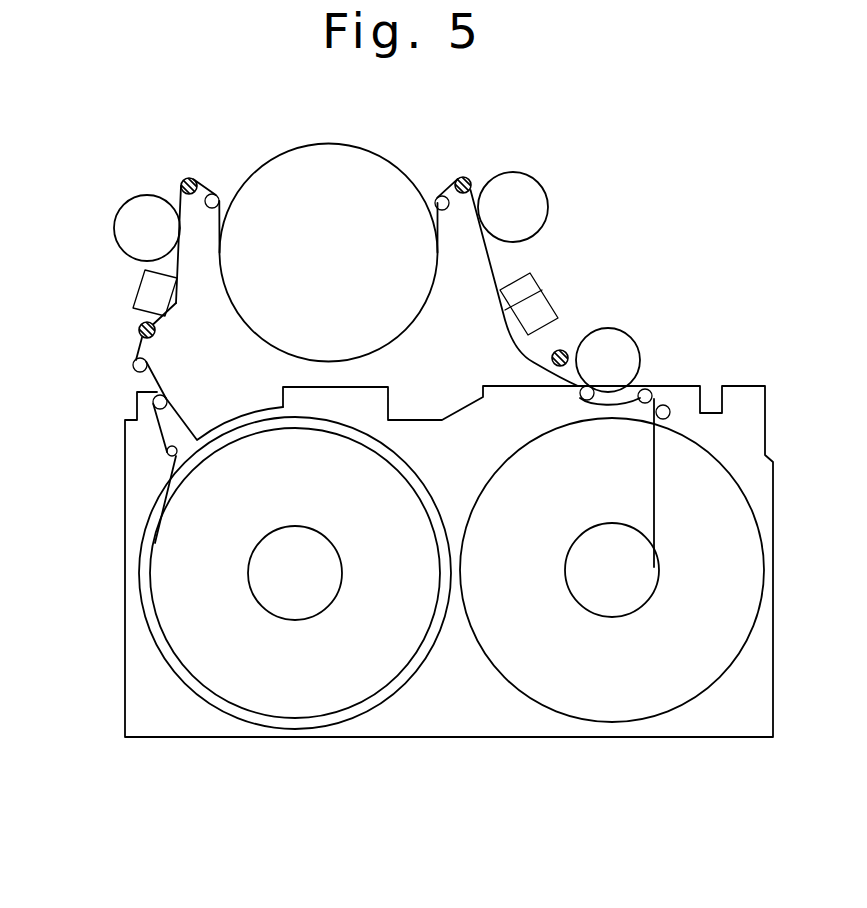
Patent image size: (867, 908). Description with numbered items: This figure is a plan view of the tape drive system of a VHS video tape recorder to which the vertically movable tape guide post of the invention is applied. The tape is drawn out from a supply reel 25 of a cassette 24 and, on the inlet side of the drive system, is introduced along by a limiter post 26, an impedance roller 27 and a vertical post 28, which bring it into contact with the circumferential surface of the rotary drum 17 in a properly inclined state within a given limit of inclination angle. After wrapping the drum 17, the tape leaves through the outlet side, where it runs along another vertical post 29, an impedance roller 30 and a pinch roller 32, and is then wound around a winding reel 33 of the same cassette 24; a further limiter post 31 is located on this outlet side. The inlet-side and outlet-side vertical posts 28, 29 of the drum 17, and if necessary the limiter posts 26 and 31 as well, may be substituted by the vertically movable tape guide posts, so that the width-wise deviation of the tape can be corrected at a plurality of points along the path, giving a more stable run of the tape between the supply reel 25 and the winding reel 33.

The rotary drum 17 is at (312, 160).
The cassette 24 is at (458, 723).
The supply reel 25 is at (262, 702).
The limiter post 26 is at (138, 332).
The impedance roller 27 is at (132, 222).
The vertical post 28 is at (188, 178).
The vertical post 29 is at (470, 178).
The impedance roller 30 is at (533, 200).
The limiter post 31 is at (562, 350).
The pinch roller 32 is at (628, 356).
The winding reel 33 is at (640, 705).